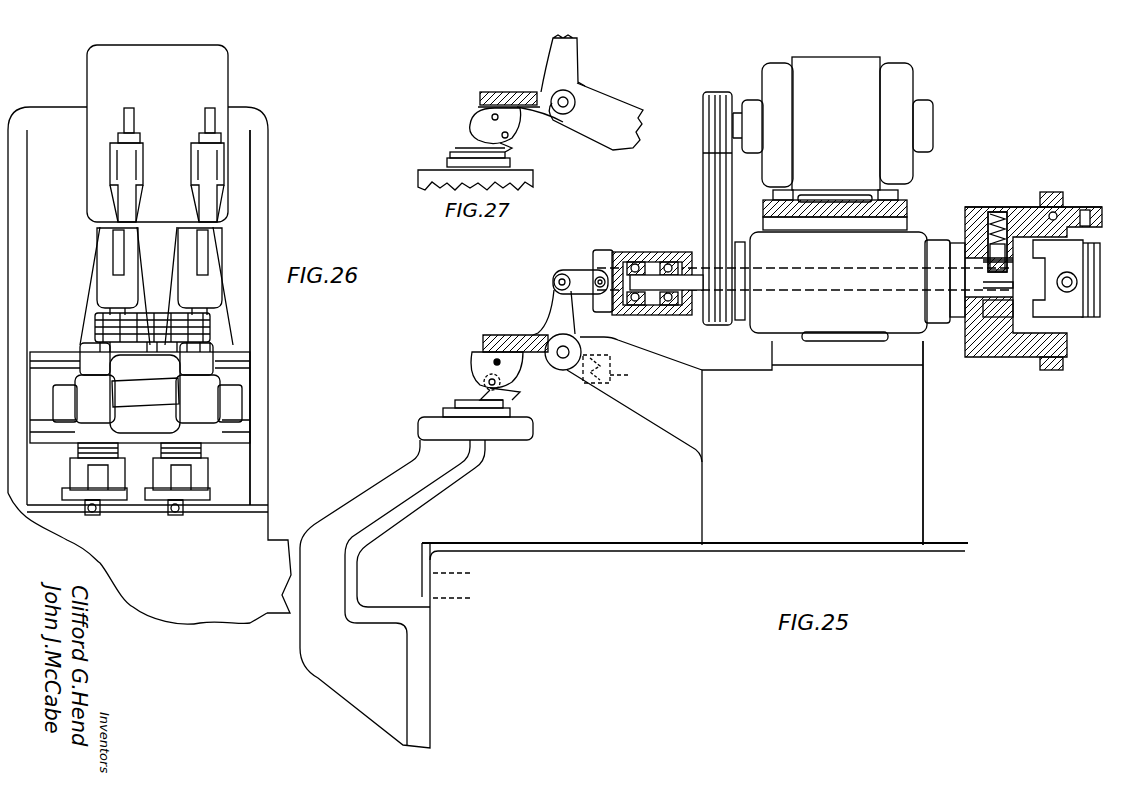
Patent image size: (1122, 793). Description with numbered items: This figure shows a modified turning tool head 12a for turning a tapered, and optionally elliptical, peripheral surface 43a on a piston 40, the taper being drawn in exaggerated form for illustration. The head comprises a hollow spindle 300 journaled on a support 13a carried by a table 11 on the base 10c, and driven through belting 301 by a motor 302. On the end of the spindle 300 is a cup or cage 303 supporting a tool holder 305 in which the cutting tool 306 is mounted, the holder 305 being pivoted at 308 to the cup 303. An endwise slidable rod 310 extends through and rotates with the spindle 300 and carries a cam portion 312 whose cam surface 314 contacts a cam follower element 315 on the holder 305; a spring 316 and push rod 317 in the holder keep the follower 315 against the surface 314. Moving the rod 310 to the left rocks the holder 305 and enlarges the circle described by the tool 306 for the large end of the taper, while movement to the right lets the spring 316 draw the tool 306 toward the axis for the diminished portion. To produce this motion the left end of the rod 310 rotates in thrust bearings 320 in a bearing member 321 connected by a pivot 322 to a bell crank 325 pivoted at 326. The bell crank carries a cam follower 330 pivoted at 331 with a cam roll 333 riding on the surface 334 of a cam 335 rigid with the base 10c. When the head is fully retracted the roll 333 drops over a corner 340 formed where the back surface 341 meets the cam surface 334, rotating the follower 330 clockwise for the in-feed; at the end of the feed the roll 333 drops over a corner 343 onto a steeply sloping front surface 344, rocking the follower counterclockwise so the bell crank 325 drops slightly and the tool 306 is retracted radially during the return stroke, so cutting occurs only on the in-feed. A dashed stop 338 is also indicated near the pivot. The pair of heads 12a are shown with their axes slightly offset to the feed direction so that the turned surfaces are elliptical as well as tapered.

In FIG. 26, the motor 302 is at (147, 388).
In FIG. 25, the motor 302 is at (862, 62).
In FIG. 26, the belting 301 is at (97, 326).
In FIG. 25, the belting 301 is at (704, 170).
In FIG. 25, the hollow spindle 300 is at (958, 245).
In FIG. 25, the endwise slidable rod 310 is at (862, 272).
In FIG. 25, the cup or cage 303 is at (970, 351).
In FIG. 25, the thrust bearings 320 is at (645, 262).
In FIG. 26, the bearing member 321 is at (105, 290).
In FIG. 25, the bearing member 321 is at (612, 262).
In FIG. 26, the pivot 322 is at (114, 244).
In FIG. 25, the pivot 322 is at (578, 272).
In FIG. 26, the bell crank 325 is at (180, 200).
In FIG. 27, the bell crank 325 is at (505, 92).
In FIG. 25, the bell crank 325 is at (551, 310).
In FIG. 27, the pivot 326 is at (578, 95).
In FIG. 25, the pivot 326 is at (576, 346).
In FIG. 27, the cam follower 330 is at (472, 131).
In FIG. 25, the cam follower 330 is at (475, 355).
In FIG. 27, the pivot 331 is at (490, 115).
In FIG. 25, the pivot 331 is at (500, 336).
In FIG. 27, the cam roll 333 is at (512, 143).
In FIG. 25, the cam roll 333 is at (489, 381).
In FIG. 27, the cam surface 334 is at (470, 141).
In FIG. 25, the cam surface 334 is at (468, 399).
In FIG. 26, the cam 335 is at (130, 120).
In FIG. 27, the cam 335 is at (465, 156).
In FIG. 25, the cam 335 is at (450, 413).
In FIG. 25, the stop 338 is at (622, 378).
In FIG. 27, the corner 340 is at (462, 140).
In FIG. 27, the back surface 341 is at (430, 171).
In FIG. 27, the corner 343 is at (515, 160).
In FIG. 25, the corner 343 is at (512, 391).
In FIG. 25, the steeply sloping front surface 344 is at (510, 404).
In FIG. 25, the tool holder 305 is at (1038, 205).
In FIG. 25, the cutting tool 306 is at (1085, 210).
In FIG. 25, the pivot 308 is at (1054, 208).
In FIG. 25, the cam portion 312 is at (1006, 262).
In FIG. 25, the cam surface 314 is at (1006, 284).
In FIG. 25, the cam follower element 315 is at (1008, 308).
In FIG. 25, the spring 316 is at (992, 214).
In FIG. 25, the push rod 317 is at (968, 218).
In FIG. 25, the piston 40 is at (1067, 293).
In FIG. 25, the tapered and elliptical peripheral surface 43a is at (1062, 336).
In FIG. 26, the tool head 12a is at (170, 518).
In FIG. 25, the tool head 12a is at (1012, 182).
In FIG. 26, the support 13a is at (240, 366).
In FIG. 25, the support 13a is at (925, 496).
In FIG. 26, the table 11 is at (263, 433).
In FIG. 25, the table 11 is at (501, 547).
In FIG. 25, the base 10c is at (435, 589).